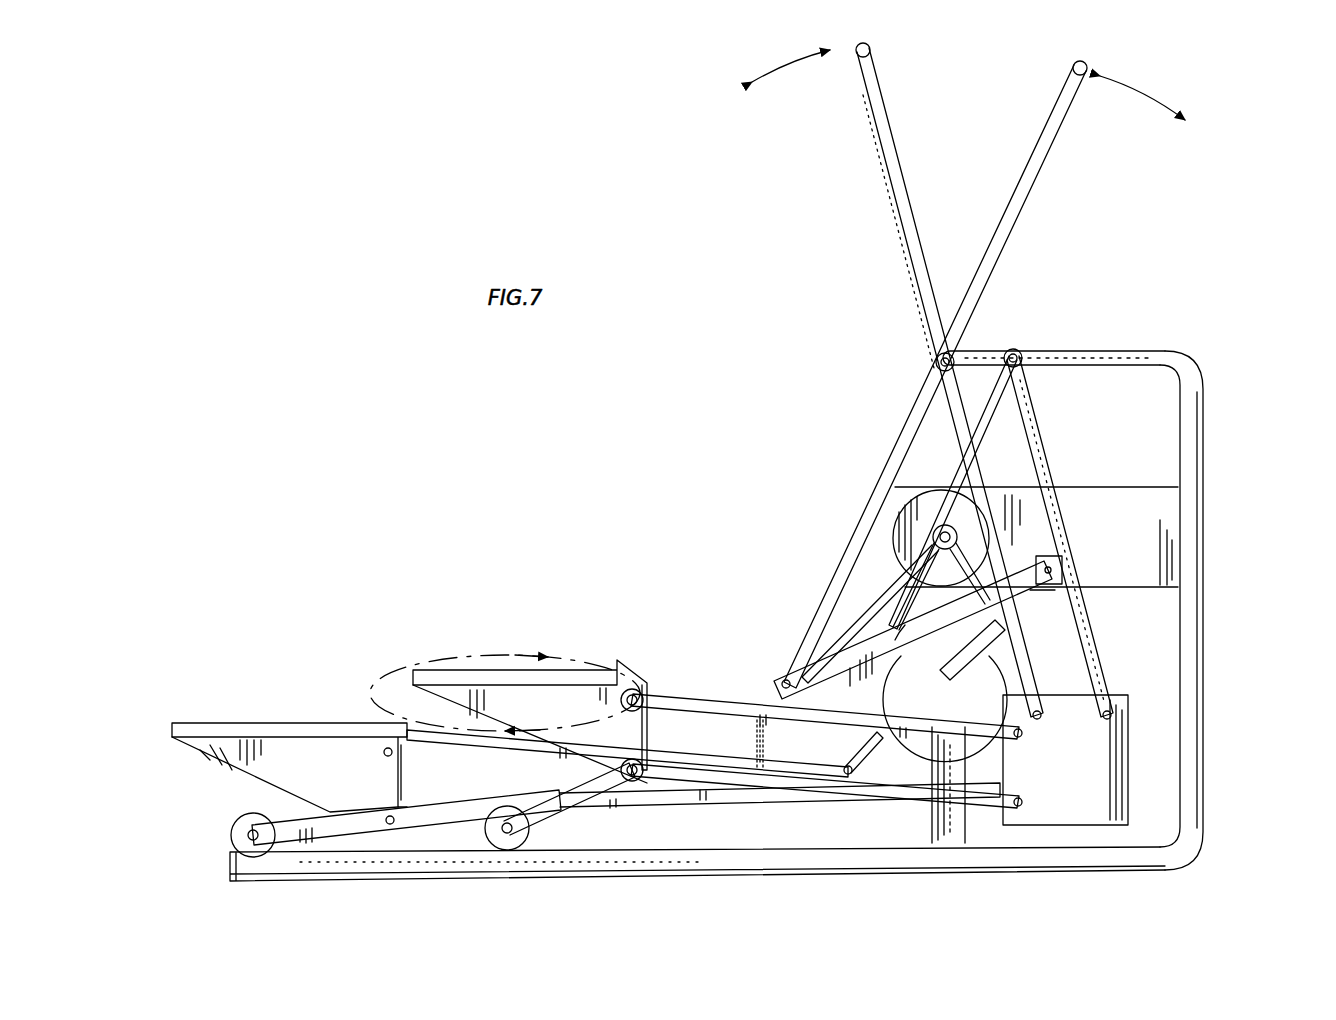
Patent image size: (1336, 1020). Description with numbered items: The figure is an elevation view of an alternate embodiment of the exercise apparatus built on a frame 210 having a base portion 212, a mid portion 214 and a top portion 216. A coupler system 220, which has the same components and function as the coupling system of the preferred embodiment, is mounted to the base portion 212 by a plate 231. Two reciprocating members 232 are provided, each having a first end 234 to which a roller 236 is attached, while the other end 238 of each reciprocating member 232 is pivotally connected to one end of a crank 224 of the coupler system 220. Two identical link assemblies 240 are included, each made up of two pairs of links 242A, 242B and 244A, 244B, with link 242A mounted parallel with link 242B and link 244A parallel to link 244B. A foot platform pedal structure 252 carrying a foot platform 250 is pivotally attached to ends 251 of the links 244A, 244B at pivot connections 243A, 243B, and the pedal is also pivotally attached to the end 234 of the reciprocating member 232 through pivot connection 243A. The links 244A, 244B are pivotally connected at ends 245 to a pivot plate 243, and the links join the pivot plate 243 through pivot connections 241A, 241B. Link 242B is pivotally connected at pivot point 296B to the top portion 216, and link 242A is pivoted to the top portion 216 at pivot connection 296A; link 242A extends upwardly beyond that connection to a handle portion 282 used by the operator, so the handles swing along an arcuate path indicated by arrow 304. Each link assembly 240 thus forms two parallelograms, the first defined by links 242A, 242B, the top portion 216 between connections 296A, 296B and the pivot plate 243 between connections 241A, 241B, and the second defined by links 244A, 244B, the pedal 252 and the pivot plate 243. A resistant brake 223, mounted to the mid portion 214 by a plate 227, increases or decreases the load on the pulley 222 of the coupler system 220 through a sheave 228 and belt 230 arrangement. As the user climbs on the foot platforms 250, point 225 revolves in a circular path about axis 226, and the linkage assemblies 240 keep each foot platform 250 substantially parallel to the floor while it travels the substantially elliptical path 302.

The frame 210 is at (1205, 540).
The base portion 212 is at (1053, 858).
The mid portion 214 is at (1205, 720).
The top portion 216 is at (1132, 350).
The coupler system 220 is at (870, 628).
The pulley 222 is at (945, 693).
The resistant brake 223 is at (905, 525).
The crank 224 is at (1028, 632).
The point 225 is at (1048, 580).
The axis 226 is at (992, 630).
The plate 227 is at (1180, 500).
The sheave 228 is at (933, 540).
The belt 230 is at (908, 583).
The plate 231 is at (950, 835).
The reciprocating member 232 is at (790, 680).
The first end 234 is at (275, 845).
The roller 236 is at (508, 850).
The other end 238 is at (1052, 557).
The link assembly 240 is at (1160, 638).
The pivot connection 241A is at (1042, 719).
The pivot connection 241B is at (1112, 718).
The link 242A is at (895, 178).
The link 242B is at (1030, 418).
The pivot plate 243 is at (1130, 805).
The pivot connection 243A is at (760, 770).
The pivot connection 243B is at (638, 694).
The link 244A is at (880, 745).
The link 244B is at (500, 752).
The end 245 is at (1003, 805).
The foot platform 250 is at (268, 720).
The end 251 is at (845, 778).
The foot platform pedal structure 252 is at (232, 745).
The handle portion 282 is at (872, 50).
The pivot connection 296A is at (938, 357).
The pivot point 296B is at (1016, 350).
The elliptical path 302 is at (467, 655).
The arrow 304 is at (795, 70).